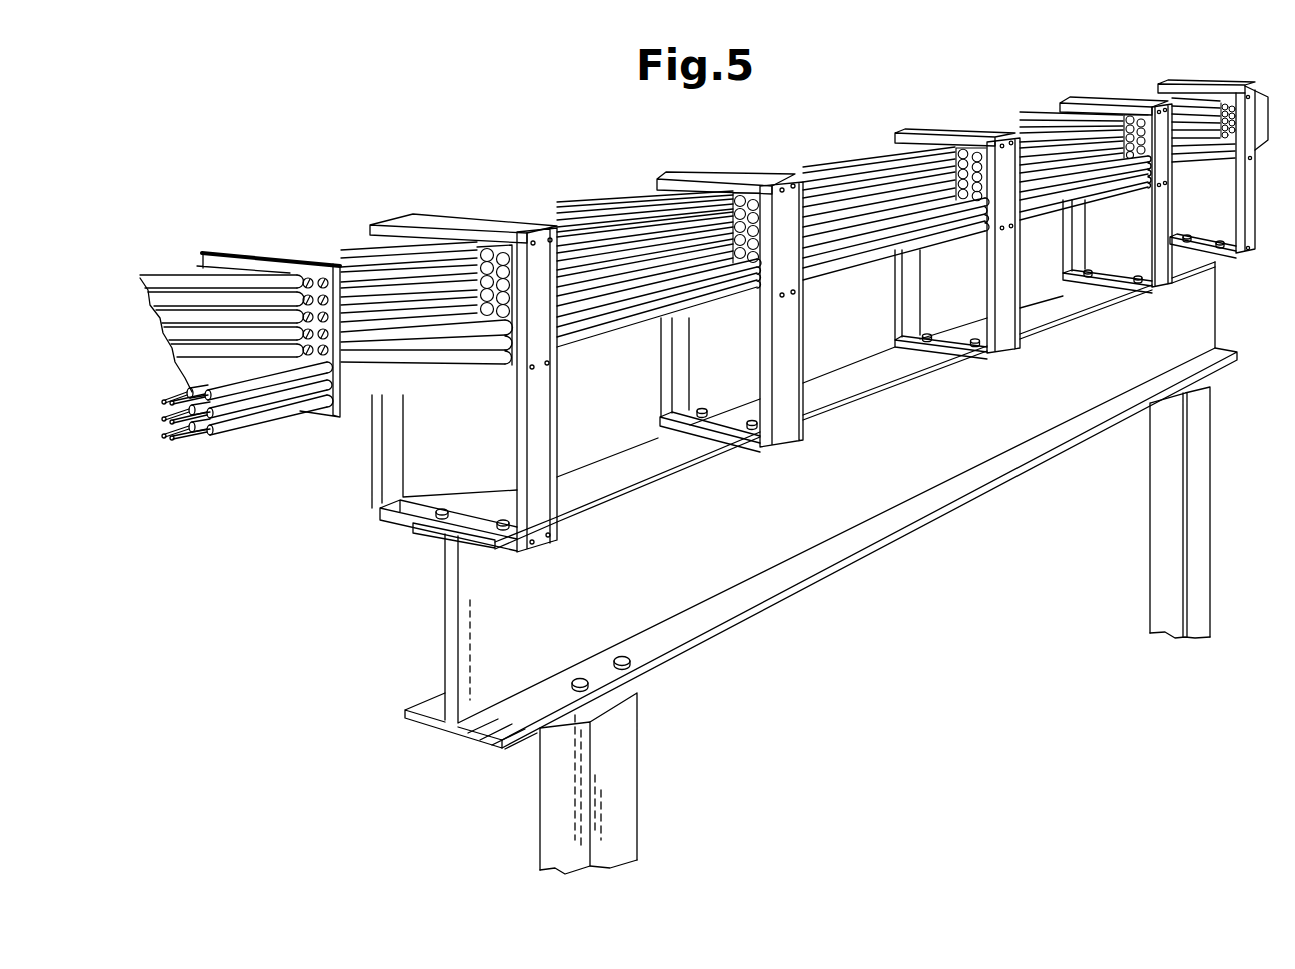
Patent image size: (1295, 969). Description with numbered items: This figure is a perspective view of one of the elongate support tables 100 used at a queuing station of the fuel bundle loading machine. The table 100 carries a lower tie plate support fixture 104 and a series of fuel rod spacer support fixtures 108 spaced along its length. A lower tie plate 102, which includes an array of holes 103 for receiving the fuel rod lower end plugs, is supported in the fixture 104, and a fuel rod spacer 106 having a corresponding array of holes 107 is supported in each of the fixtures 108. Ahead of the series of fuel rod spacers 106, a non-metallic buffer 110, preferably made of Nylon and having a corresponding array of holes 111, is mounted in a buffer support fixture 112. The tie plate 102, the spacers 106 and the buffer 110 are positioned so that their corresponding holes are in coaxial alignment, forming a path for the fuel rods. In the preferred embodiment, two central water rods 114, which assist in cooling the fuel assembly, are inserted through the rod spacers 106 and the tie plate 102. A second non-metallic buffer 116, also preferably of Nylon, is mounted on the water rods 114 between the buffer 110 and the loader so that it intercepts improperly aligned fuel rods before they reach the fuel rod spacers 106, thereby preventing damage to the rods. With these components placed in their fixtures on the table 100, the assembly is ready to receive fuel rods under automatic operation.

The support table 100 is at (922, 470).
The lower tie plate 102 is at (1198, 93).
The holes 103 is at (1223, 103).
The lower tie plate support fixture 104 is at (1160, 84).
The fuel rod spacer 106 is at (958, 150).
The holes 107 is at (973, 150).
The fuel rod spacer support fixture 108 is at (1073, 98).
The non-metallic buffer 110 is at (380, 233).
The holes 111 is at (490, 253).
The buffer support fixture 112 is at (392, 218).
The central water rods 114 is at (215, 352).
The second non-metallic buffer 116 is at (202, 255).